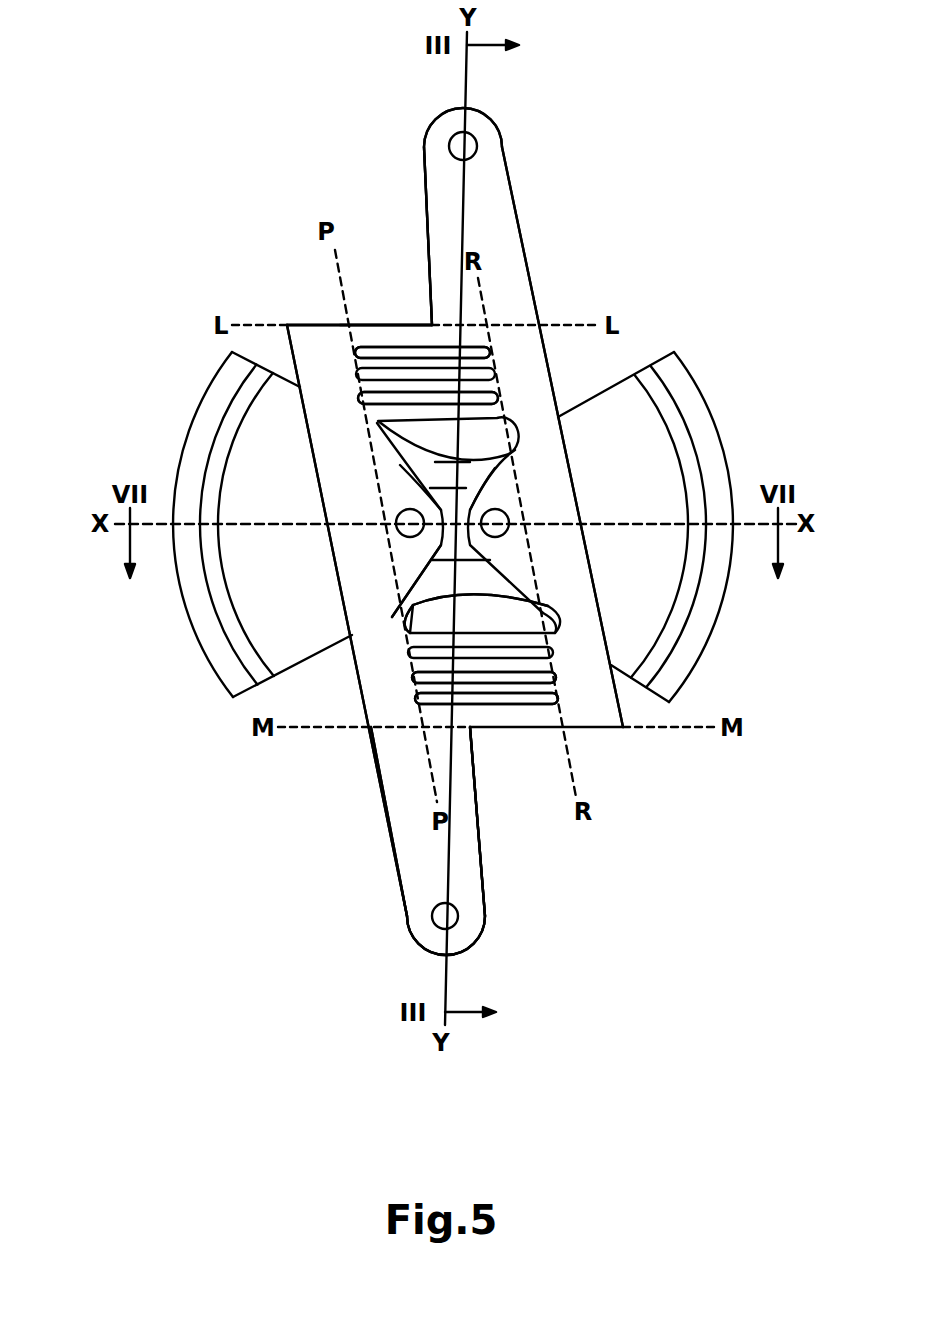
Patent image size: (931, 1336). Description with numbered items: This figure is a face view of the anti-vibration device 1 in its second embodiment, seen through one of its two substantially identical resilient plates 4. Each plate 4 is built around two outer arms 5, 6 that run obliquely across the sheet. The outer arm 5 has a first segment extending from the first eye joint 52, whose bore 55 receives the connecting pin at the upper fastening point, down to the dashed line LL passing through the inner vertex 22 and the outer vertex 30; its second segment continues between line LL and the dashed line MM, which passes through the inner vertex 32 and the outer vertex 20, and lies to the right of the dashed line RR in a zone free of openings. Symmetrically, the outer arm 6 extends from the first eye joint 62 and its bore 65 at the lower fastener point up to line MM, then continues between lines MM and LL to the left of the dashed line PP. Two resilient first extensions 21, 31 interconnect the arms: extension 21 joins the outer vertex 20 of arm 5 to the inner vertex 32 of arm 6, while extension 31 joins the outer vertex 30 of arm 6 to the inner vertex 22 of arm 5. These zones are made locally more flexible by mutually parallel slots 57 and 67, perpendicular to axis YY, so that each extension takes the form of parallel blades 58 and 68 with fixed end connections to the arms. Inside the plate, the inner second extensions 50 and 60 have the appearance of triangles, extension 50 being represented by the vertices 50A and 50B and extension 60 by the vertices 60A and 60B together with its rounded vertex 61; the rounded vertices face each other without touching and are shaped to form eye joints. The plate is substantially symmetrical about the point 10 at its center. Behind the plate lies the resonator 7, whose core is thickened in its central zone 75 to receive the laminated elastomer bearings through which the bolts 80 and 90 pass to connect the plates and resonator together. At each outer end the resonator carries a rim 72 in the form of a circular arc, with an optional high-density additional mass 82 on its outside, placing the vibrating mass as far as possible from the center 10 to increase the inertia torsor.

The anti-vibration device 1 is at (593, 291).
The resilient plate 4 is at (390, 826).
The outer arm 5 is at (519, 243).
The outer arm 6 is at (416, 877).
The resonator 7 is at (655, 350).
The center point 10 is at (456, 593).
The outer vertex 20 is at (623, 730).
The resilient first extension 21 is at (505, 717).
The inner vertex 22 is at (436, 319).
The outer vertex 30 is at (287, 323).
The resilient first extension 31 is at (412, 323).
The inner vertex 32 is at (477, 735).
The inner second extension 50 is at (555, 484).
The vertex of inner second extension 50A is at (500, 420).
The vertex of inner second extension 50B is at (546, 615).
The first eye joint 52 is at (486, 114).
The bore 55 is at (478, 144).
The slot 57 is at (549, 716).
The blade 58 is at (556, 679).
The inner second extension 60 is at (390, 577).
The vertex of inner second extension 60A is at (395, 650).
The vertex of inner second extension 60B is at (380, 423).
The rounded vertex 61 is at (423, 506).
The first eye joint 62 is at (480, 912).
The bore 65 is at (432, 918).
The slot 67 is at (384, 323).
The blade 68 is at (377, 392).
The rim 72 is at (243, 640).
The central zone 75 is at (470, 480).
The bolt 80 is at (397, 534).
The additional mass 82 is at (222, 670).
The bolt 90 is at (506, 538).